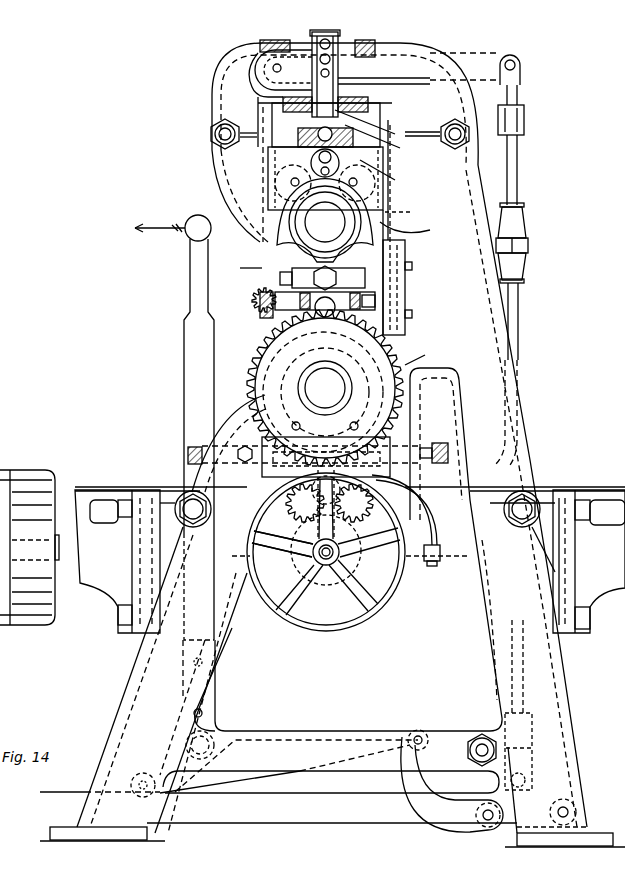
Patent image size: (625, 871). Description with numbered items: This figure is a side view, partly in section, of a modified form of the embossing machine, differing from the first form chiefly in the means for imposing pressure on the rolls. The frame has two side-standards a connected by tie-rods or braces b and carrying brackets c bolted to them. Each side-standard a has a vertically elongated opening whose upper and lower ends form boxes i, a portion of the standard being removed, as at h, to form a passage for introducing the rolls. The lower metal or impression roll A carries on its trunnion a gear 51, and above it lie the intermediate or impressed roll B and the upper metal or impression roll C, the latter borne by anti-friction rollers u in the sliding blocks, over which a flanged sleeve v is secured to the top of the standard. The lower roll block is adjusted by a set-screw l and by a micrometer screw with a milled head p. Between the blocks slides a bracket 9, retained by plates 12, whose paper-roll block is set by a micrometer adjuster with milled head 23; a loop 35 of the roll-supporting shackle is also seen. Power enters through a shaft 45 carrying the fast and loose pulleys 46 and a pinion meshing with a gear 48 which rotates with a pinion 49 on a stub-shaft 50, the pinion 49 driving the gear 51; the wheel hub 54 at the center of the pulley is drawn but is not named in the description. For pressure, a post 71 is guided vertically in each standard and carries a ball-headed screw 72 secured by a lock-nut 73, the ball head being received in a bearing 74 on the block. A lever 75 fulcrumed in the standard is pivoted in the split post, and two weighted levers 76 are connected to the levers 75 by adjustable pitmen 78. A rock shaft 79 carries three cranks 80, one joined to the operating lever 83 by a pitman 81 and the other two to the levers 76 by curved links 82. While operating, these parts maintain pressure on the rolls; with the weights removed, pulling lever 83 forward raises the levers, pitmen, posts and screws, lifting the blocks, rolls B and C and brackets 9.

The post 71 is at (338, 70).
The screw 72 is at (325, 125).
The lock-nut 73 is at (378, 134).
The bearing 74 is at (388, 176).
The lever 75 is at (484, 80).
The adjustable pitman 78 is at (520, 330).
The anti-friction rollers u is at (402, 213).
The flanged sleeve v is at (410, 229).
The vertically sliding bracket 9 is at (400, 245).
The loop 35 is at (290, 218).
The upper metal or impression roll C is at (290, 256).
The removed portion of side-standard h is at (242, 269).
The intermediate or impressed roll B is at (283, 292).
The milled head 23 is at (260, 310).
The plate 12 is at (338, 330).
The gear 51 is at (423, 355).
The lower metal or impression roll A is at (262, 378).
The box i is at (405, 412).
The set-screw l is at (188, 455).
The plate J is at (272, 470).
The milled head p is at (436, 463).
The operating lever 83 is at (190, 343).
The gear 48 is at (303, 513).
The pinion 49 is at (356, 507).
The stub-shaft 50 is at (312, 533).
The power shaft 45 is at (306, 560).
The hub 54 is at (331, 574).
The fast and loose pulleys 46 is at (388, 610).
The bracket c is at (108, 585).
The tie-rods or braces b is at (605, 588).
The side-standard a is at (557, 690).
The rock shaft 79 is at (212, 738).
The crank 80 is at (418, 730).
The pitman 81 is at (255, 778).
The curved link 82 is at (440, 812).
The lever 76 is at (352, 826).